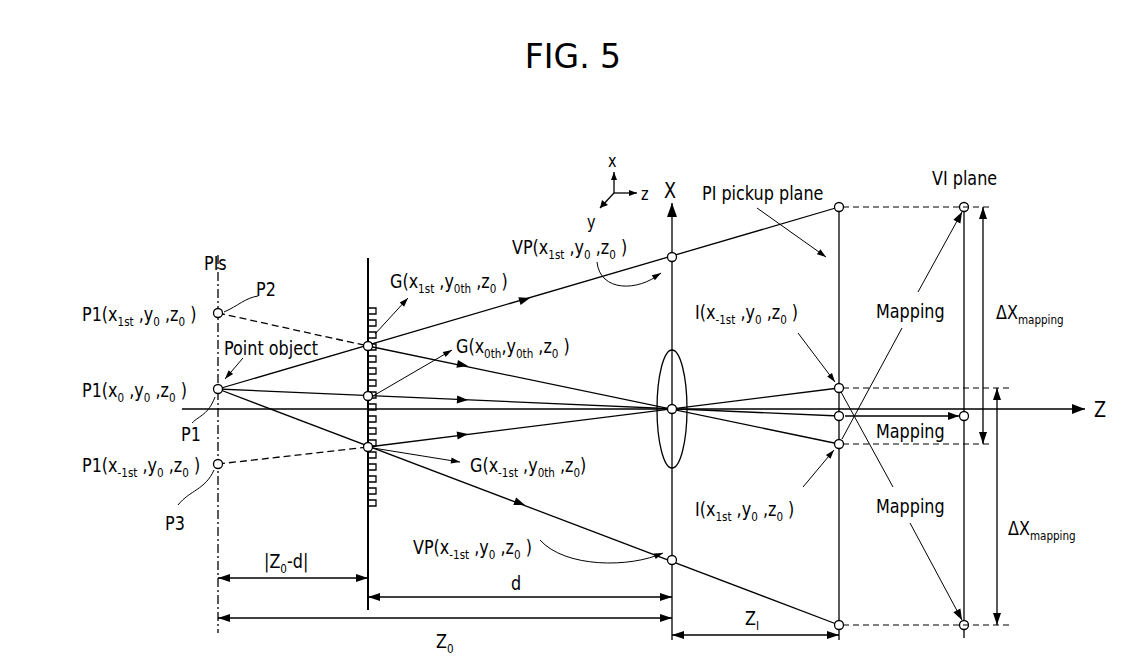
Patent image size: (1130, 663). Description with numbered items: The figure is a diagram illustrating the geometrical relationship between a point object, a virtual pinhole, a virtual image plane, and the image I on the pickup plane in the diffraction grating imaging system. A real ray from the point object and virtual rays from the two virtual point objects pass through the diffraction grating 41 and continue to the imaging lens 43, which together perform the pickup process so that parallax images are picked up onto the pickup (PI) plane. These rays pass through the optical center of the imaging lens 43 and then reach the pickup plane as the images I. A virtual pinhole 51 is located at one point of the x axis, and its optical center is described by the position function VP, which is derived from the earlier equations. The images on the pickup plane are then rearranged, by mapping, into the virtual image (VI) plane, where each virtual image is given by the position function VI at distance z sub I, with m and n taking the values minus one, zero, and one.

The diffraction grating 41 is at (373, 308).
The imaging lens 43 is at (660, 370).
The virtual pinhole 51 is at (676, 255).